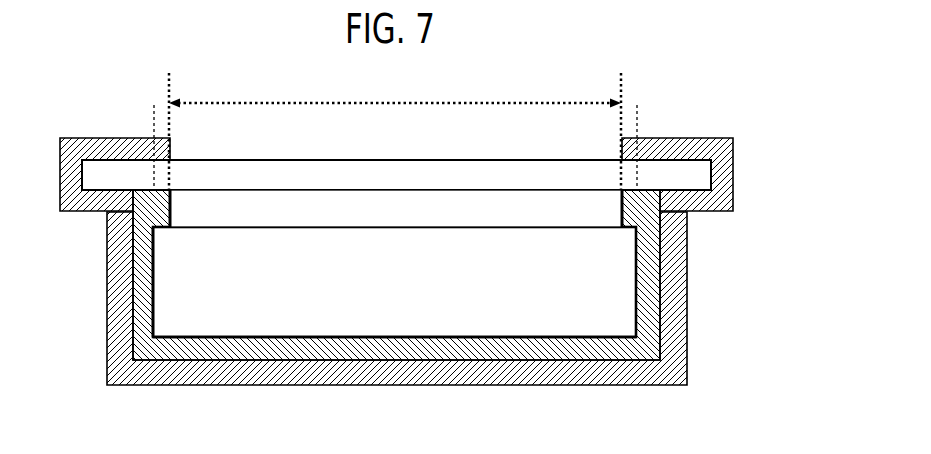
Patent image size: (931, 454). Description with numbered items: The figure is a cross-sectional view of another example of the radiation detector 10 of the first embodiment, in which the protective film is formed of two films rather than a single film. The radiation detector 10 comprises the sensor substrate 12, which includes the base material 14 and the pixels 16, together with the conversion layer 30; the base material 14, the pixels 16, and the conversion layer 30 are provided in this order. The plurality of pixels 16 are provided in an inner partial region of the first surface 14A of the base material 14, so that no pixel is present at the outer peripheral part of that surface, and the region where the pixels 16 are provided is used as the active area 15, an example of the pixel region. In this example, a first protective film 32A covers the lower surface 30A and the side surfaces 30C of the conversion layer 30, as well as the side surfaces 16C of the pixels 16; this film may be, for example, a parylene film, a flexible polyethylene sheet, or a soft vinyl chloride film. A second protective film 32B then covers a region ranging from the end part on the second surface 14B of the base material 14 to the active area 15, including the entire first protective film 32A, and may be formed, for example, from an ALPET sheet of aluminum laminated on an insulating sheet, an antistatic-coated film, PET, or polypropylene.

The radiation detector 10 is at (717, 449).
The sensor substrate 12 is at (777, 162).
The base material 14 is at (702, 175).
The first surface 14A is at (88, 201).
The second surface 14B is at (456, 150).
The active area 15 is at (395, 129).
The pixels 16 is at (600, 205).
The side surfaces of the pixels 16C is at (159, 213).
The conversion layer 30 is at (623, 282).
The lower surface 30A is at (396, 347).
The side surfaces 30C is at (143, 283).
The first protective film 32A is at (147, 352).
The second protective film 32B is at (677, 343).